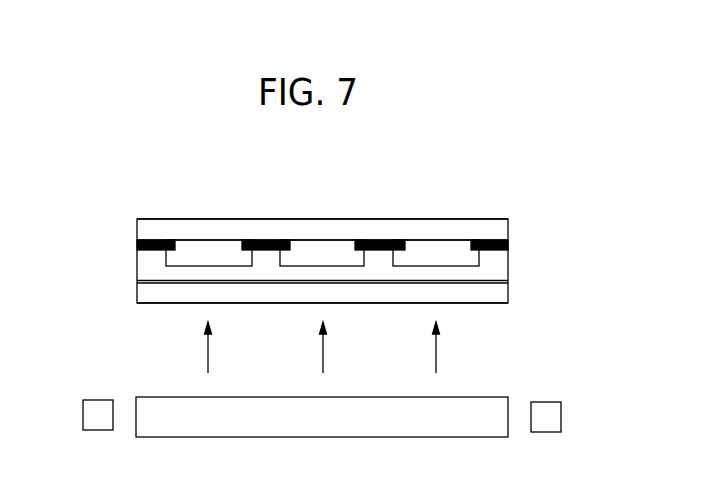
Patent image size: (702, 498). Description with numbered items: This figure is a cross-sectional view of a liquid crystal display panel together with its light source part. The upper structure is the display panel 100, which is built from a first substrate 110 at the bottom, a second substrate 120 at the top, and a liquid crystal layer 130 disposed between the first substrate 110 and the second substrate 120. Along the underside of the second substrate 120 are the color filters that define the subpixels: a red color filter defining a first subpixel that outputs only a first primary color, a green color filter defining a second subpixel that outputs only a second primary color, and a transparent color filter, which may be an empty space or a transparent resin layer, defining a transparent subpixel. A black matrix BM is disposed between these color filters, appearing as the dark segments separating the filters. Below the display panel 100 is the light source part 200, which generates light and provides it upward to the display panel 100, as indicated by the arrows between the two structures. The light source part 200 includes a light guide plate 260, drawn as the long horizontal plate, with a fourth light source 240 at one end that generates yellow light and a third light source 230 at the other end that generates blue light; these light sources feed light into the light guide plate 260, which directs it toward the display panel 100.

The display panel 100 is at (78, 217).
The first substrate 110 is at (137, 290).
The second substrate 120 is at (137, 223).
The liquid crystal layer 130 is at (137, 268).
The black matrix BM is at (264, 240).
The light source part 200 is at (78, 385).
The third light source 230 is at (545, 432).
The fourth light source 240 is at (97, 430).
The light guide plate 260 is at (323, 437).